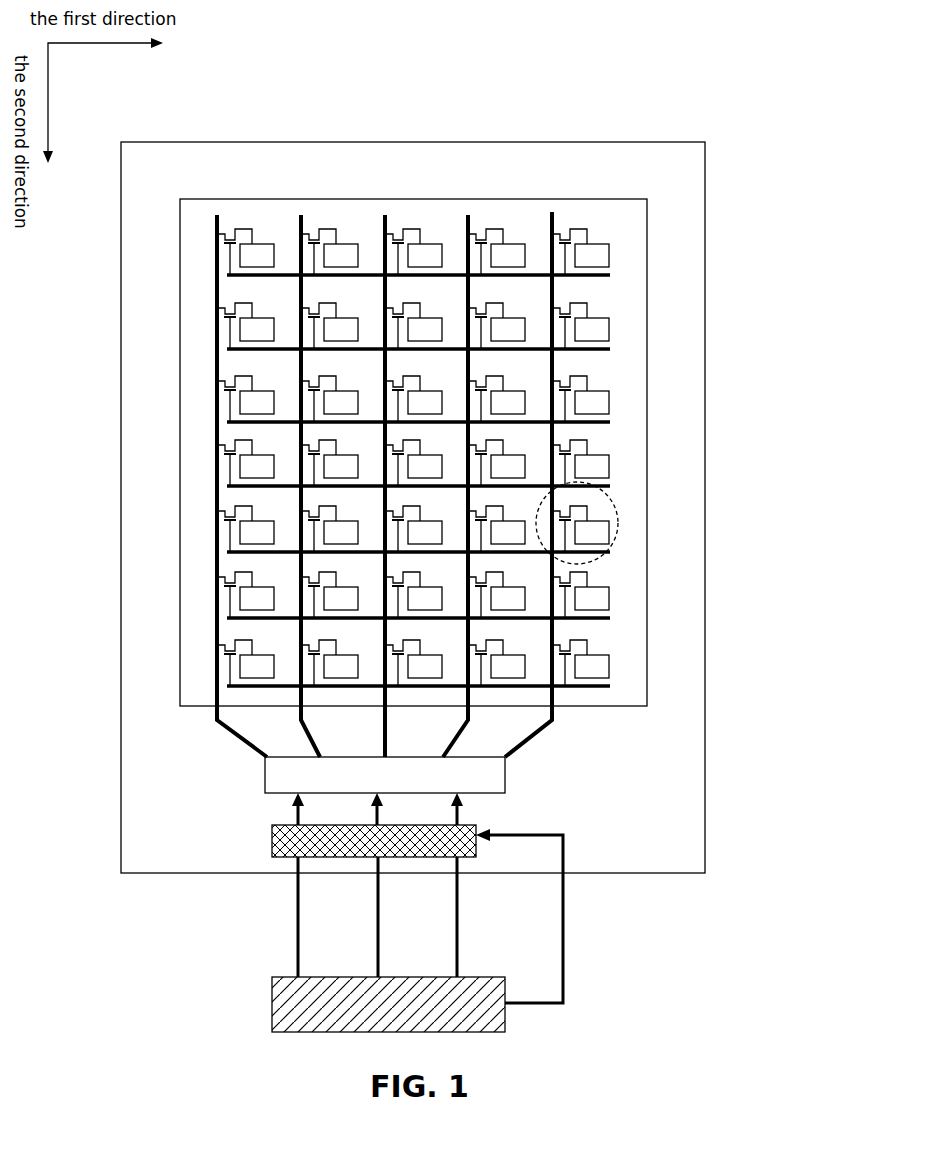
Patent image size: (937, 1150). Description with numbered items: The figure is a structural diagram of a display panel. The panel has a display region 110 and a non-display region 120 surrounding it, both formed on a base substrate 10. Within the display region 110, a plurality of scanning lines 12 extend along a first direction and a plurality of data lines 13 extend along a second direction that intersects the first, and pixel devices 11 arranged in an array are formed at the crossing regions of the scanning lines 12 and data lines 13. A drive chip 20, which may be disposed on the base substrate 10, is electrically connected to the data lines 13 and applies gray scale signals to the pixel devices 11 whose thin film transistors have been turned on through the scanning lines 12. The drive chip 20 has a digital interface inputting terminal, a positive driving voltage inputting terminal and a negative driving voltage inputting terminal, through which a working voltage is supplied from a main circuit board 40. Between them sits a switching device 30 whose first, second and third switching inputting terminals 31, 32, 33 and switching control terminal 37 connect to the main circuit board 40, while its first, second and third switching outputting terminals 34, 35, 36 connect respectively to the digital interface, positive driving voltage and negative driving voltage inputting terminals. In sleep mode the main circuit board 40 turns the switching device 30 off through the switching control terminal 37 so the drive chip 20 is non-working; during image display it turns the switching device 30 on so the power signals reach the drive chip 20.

The base substrate 10 is at (705, 422).
The display region 110 is at (647, 256).
The non-display region 120 is at (686, 326).
The pixel device 11 is at (616, 513).
The scanning line 12 is at (610, 618).
The data line 13 is at (550, 707).
The drive chip 20 is at (505, 780).
The switching device 30 is at (272, 843).
The first switching inputting terminal 31 is at (314, 917).
The second switching inputting terminal 32 is at (394, 917).
The third switching inputting terminal 33 is at (471, 917).
The first switching outputting terminal 34 is at (312, 810).
The second switching outputting terminal 35 is at (391, 810).
The third switching outputting terminal 36 is at (469, 810).
The switching control terminal 37 is at (519, 916).
The main circuit board 40 is at (272, 1012).